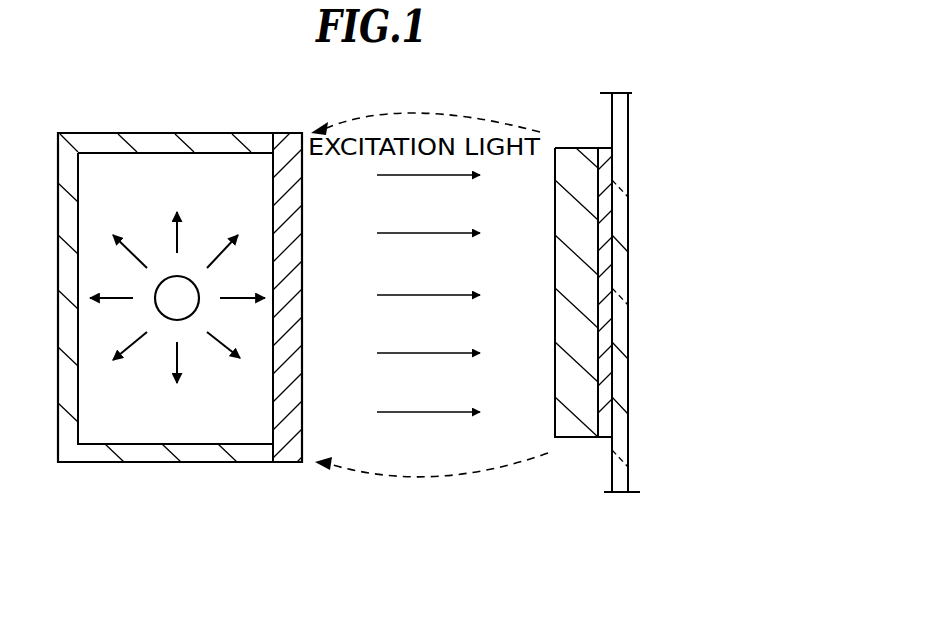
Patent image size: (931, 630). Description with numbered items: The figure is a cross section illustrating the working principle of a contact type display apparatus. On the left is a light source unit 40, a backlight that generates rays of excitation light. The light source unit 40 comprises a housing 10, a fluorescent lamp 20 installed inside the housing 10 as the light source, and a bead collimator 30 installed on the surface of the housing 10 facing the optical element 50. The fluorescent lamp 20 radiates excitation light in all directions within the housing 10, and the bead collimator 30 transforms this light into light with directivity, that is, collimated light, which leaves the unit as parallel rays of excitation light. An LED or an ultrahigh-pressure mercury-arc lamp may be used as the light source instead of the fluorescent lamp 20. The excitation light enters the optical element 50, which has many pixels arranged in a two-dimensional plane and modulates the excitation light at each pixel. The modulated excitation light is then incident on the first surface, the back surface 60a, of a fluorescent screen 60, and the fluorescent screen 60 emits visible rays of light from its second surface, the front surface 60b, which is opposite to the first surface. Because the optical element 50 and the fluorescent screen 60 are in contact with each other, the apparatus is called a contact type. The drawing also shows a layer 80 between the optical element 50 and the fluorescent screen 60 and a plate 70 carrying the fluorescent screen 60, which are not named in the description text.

The housing 10 is at (150, 138).
The fluorescent lamp 20 is at (193, 282).
The bead collimator 30 is at (283, 140).
The light source unit 40 is at (200, 327).
The optical element 50 is at (567, 437).
The fluorescent screen 60 is at (626, 330).
The back surface 60a is at (596, 385).
The front surface 60b is at (630, 334).
The transparent substrate 70 is at (622, 160).
The adhesive layer 80 is at (600, 148).